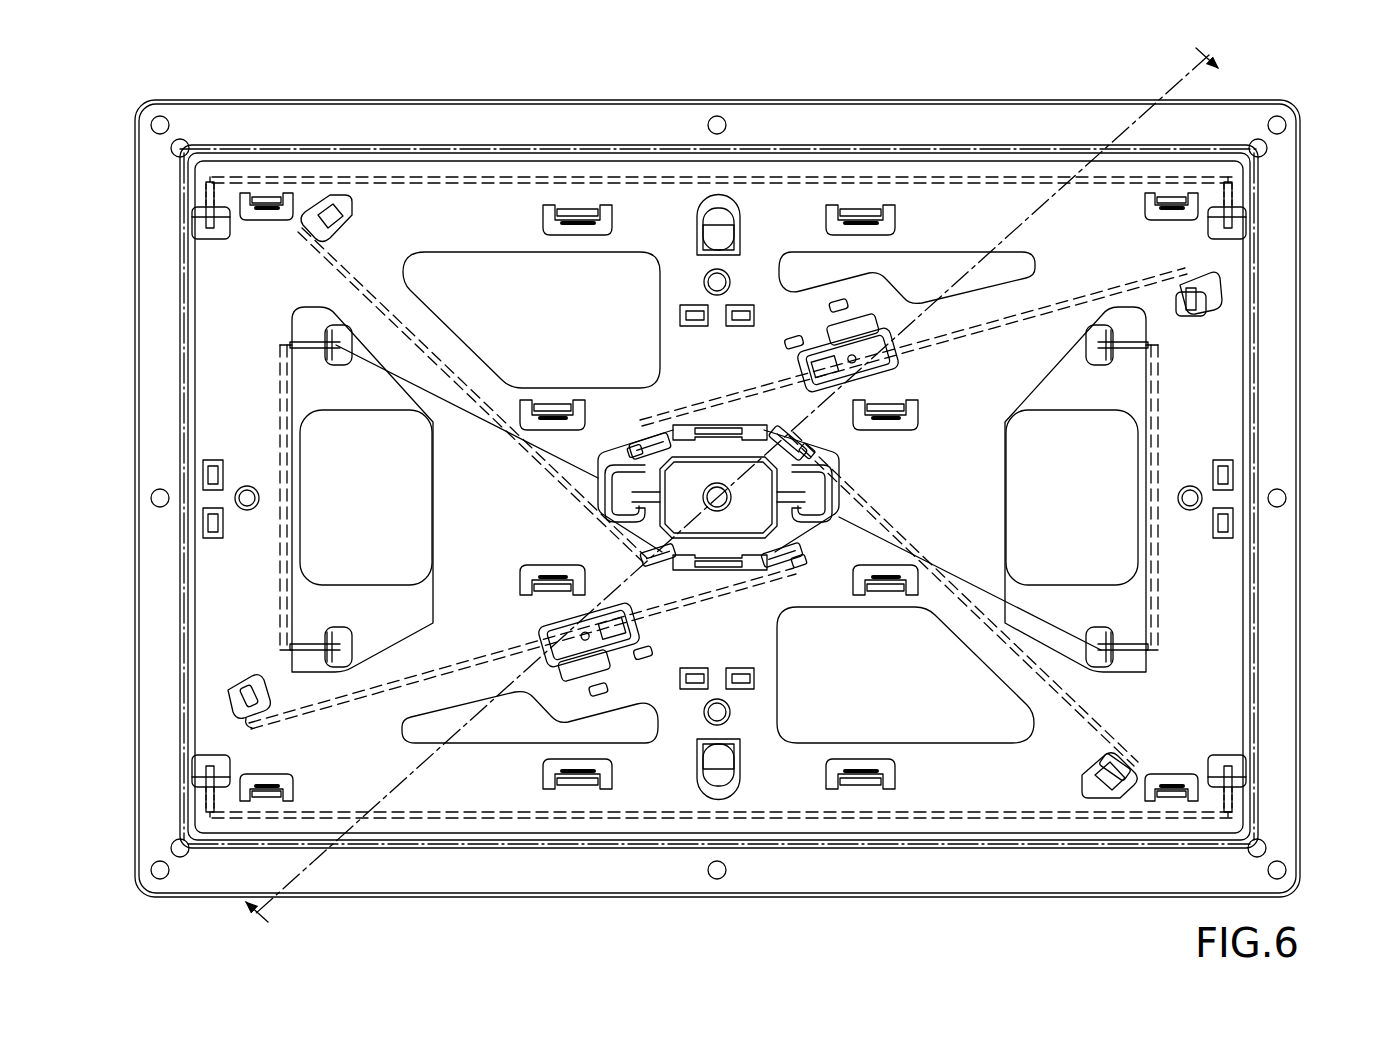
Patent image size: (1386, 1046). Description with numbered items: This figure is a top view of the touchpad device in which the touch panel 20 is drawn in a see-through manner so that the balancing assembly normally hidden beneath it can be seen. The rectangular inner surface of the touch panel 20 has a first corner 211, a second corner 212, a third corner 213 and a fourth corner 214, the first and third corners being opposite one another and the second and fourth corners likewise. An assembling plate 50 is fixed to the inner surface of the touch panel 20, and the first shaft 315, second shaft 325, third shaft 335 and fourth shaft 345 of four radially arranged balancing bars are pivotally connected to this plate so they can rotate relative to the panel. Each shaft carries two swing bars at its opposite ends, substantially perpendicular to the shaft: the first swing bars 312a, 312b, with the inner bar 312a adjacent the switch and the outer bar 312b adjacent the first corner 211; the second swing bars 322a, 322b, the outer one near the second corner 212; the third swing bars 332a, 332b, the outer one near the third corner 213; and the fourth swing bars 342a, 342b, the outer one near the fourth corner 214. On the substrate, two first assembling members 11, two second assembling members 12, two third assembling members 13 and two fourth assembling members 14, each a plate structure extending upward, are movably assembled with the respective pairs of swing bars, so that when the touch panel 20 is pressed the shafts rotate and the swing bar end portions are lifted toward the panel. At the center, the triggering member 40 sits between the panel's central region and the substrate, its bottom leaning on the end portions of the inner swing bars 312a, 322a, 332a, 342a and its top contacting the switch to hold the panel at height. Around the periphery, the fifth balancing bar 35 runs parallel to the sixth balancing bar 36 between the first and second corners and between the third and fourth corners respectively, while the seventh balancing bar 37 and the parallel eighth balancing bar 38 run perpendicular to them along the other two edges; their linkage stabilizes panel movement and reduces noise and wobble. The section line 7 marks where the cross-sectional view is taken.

The line 7- 7 is at (748, 504).
The first assembling members 11 is at (343, 262).
The second assembling members 12 is at (668, 440).
The third assembling members 13 is at (786, 430).
The fourth assembling members 14 is at (236, 700).
The touch panel 20 is at (1045, 141).
The fifth balancing bar 35 is at (956, 178).
The sixth balancing bar 36 is at (905, 821).
The seventh balancing bar 37 is at (280, 594).
The eighth balancing bar 38 is at (1159, 622).
The triggering member 40 is at (751, 437).
The assembling plate 50 is at (890, 151).
The first corner 211 is at (205, 202).
The second corner 212 is at (1254, 157).
The third corner 213 is at (1243, 840).
The fourth corner 214 is at (186, 843).
The first swing bar 312a is at (657, 562).
The first swing bar 312b is at (318, 205).
The first shaft 315 is at (350, 328).
The second swing bar 322a is at (648, 436).
The second swing bar 322b is at (1208, 282).
The second shaft 325 is at (1142, 325).
The third swing bar 332a is at (805, 432).
The third swing bar 332b is at (1125, 772).
The third shaft 335 is at (1125, 660).
The fourth swing bar 342a is at (796, 568).
The fourth swing bar 342b is at (252, 722).
The fourth shaft 345 is at (322, 646).